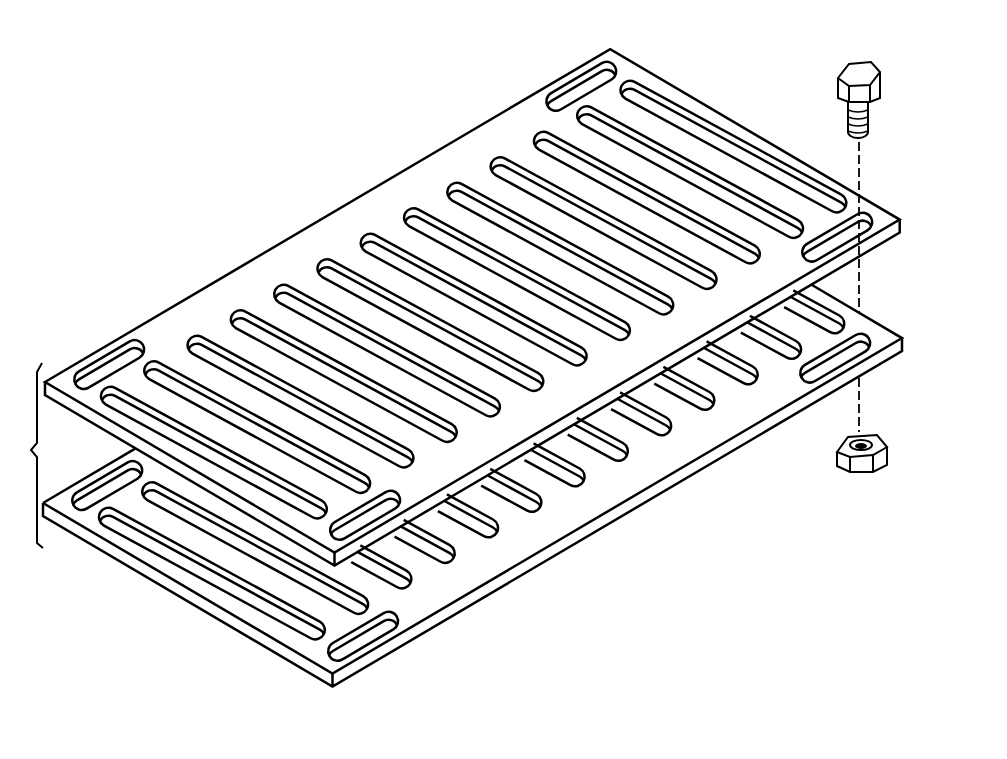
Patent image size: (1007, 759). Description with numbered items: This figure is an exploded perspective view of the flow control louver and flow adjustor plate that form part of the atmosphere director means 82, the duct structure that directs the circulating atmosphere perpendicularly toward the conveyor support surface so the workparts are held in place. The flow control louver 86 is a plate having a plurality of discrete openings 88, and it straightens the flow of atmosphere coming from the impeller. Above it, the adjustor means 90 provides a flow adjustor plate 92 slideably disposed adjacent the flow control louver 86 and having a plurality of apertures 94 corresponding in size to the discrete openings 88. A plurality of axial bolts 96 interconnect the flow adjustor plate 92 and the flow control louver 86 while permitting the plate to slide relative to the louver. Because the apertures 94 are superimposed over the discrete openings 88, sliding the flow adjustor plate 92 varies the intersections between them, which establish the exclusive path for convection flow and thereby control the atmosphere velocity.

The atmosphere director means 82 is at (645, 52).
The flow control louver 86 is at (724, 447).
The discrete openings 88 is at (568, 480).
The adjustor means 90 is at (211, 278).
The flow adjustor plate 92 is at (302, 229).
The apertures 94 is at (458, 189).
The axial bolts 96 is at (848, 117).